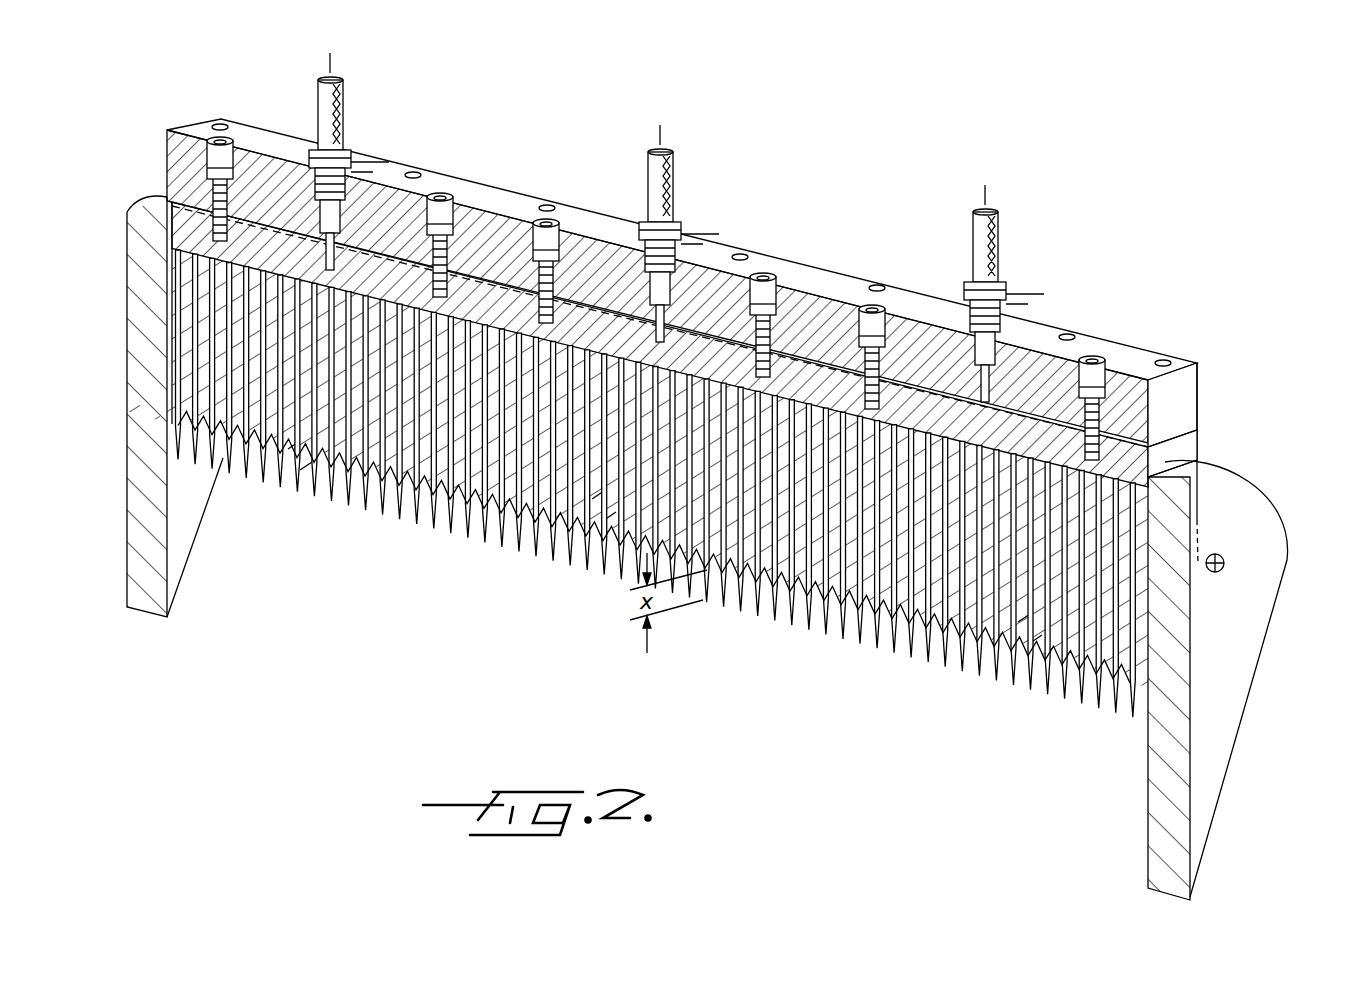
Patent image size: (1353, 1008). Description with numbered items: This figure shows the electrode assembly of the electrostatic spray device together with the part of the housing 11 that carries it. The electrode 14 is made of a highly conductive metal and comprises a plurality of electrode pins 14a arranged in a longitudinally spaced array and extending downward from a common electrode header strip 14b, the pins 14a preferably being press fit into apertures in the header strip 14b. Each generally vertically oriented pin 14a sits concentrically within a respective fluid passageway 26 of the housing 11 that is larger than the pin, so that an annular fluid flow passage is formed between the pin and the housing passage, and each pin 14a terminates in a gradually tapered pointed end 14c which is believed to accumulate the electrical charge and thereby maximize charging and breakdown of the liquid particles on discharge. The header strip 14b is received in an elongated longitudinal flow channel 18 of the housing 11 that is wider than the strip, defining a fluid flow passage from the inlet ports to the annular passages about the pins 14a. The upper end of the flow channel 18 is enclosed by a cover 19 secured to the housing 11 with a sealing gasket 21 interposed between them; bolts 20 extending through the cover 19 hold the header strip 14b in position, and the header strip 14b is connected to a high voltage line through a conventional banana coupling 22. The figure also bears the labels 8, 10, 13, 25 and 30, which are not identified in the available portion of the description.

The electrode plate 8 is at (713, 400).
The ion generating assembly 10 is at (1195, 298).
The housing 11 is at (1195, 447).
The electrode array 13 is at (452, 514).
The electrode 14 is at (1117, 457).
The electrode pin 14a is at (300, 438).
The electrode header strip 14b is at (253, 232).
The tapered pointed end 14c is at (368, 497).
The elongated flow channel 18 is at (172, 250).
The cover 19 is at (397, 167).
The bolt 20 is at (210, 172).
The sealing gasket 21 is at (167, 192).
The banana coupling 22 is at (352, 208).
The pointed electrode 25 is at (178, 316).
The fluid passageway 26 is at (170, 358).
The mounting bracket 30 is at (133, 483).